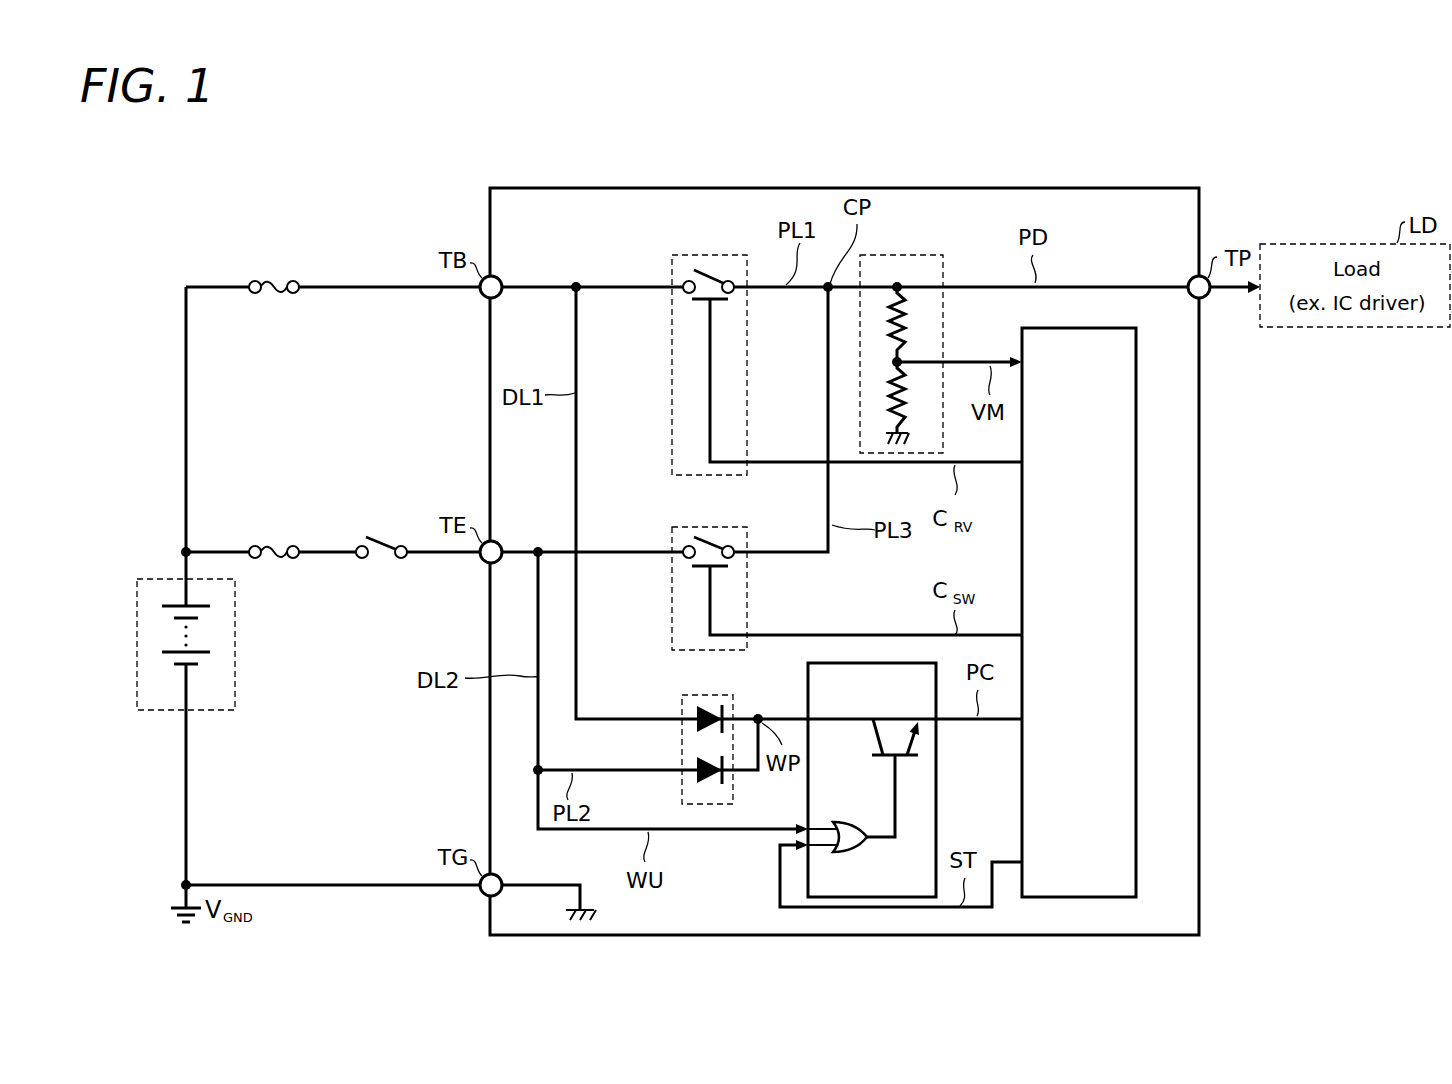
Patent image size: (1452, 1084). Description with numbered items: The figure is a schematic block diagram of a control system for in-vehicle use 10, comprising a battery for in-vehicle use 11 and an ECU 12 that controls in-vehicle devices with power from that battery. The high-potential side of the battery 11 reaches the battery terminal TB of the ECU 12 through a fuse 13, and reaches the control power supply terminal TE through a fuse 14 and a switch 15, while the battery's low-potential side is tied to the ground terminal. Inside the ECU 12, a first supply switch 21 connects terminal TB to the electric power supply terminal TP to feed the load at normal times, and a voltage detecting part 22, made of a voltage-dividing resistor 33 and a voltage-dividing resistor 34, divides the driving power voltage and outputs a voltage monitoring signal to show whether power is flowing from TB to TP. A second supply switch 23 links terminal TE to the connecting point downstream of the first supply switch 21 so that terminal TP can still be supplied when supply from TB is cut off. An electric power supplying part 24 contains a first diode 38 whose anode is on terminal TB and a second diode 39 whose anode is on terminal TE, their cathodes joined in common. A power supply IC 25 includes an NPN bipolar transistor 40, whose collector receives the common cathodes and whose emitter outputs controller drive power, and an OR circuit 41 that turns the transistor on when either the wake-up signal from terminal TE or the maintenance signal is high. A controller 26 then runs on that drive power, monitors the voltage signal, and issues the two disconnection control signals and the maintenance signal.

The control system for in-vehicle use 10 is at (724, 158).
The battery for in-vehicle use 11 is at (152, 578).
The ECU 12 is at (1035, 188).
The fuse 13 is at (278, 275).
The fuse 14 is at (278, 540).
The switch 15 is at (383, 537).
The first supply switch 21 is at (710, 252).
The voltage detecting part 22 is at (934, 340).
The second supply switch 23 is at (710, 526).
The electric power supplying part 24 is at (701, 752).
The power supply IC 25 is at (905, 780).
The controller 26 is at (1088, 328).
The voltage-dividing resistor 33 is at (908, 325).
The voltage-dividing resistor 34 is at (908, 403).
The first diode 38 is at (710, 738).
The second diode 39 is at (710, 787).
The NPN bipolar transistor 40 is at (920, 747).
The OR circuit 41 is at (852, 817).